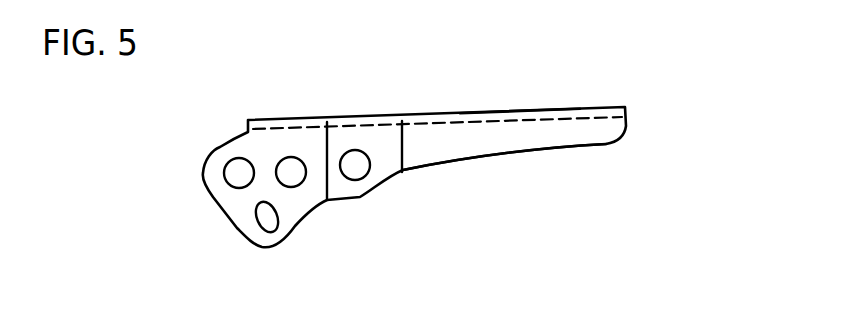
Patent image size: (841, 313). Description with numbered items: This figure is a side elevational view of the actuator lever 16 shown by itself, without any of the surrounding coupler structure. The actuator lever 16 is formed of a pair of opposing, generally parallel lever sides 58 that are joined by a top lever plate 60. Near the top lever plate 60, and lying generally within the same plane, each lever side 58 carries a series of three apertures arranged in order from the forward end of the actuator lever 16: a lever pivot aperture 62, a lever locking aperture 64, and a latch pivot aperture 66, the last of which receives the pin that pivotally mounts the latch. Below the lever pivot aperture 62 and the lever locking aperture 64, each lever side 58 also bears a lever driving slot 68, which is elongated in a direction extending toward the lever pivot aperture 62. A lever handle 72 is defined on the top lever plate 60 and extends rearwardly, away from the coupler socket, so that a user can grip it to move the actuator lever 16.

The actuator lever 16 is at (587, 135).
The lever sides 58 is at (482, 145).
The top lever plate 60 is at (504, 115).
The lever pivot aperture 62 is at (233, 172).
The lever locking aperture 64 is at (289, 170).
The latch pivot aperture 66 is at (357, 162).
The lever driving slot 68 is at (253, 223).
The lever handle 72 is at (567, 108).